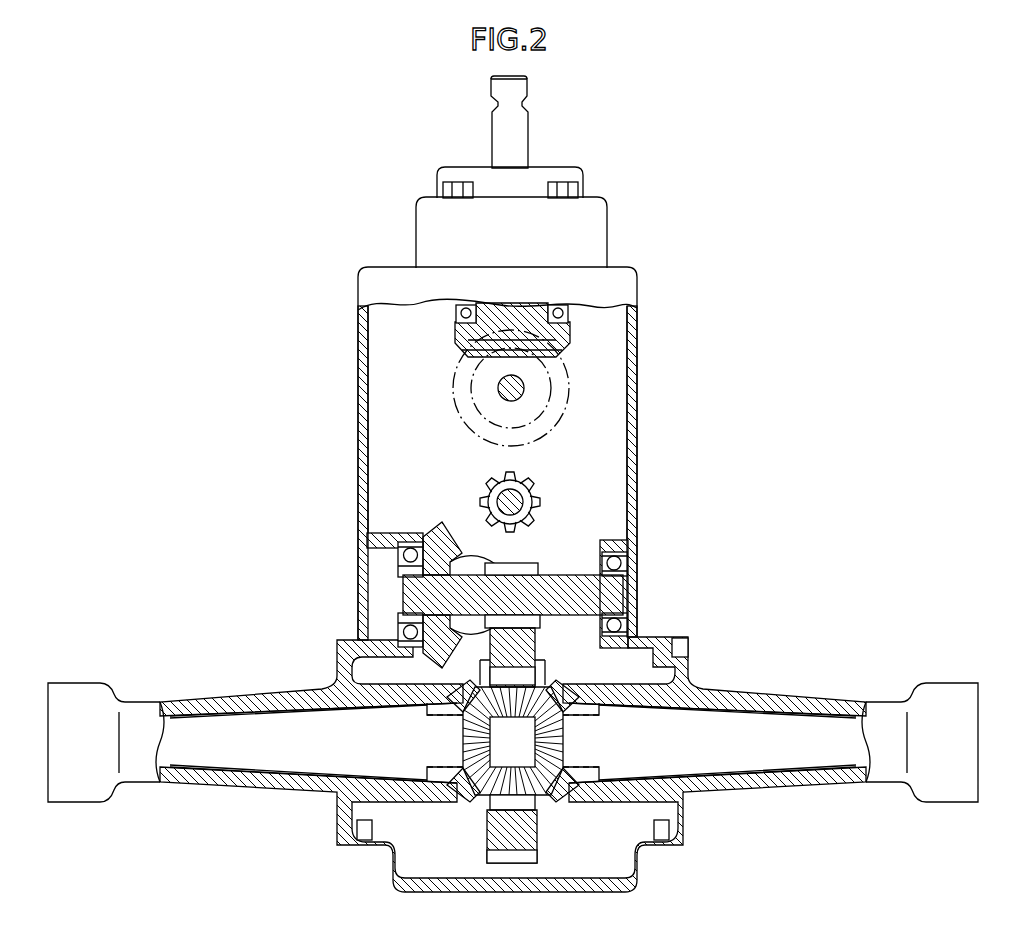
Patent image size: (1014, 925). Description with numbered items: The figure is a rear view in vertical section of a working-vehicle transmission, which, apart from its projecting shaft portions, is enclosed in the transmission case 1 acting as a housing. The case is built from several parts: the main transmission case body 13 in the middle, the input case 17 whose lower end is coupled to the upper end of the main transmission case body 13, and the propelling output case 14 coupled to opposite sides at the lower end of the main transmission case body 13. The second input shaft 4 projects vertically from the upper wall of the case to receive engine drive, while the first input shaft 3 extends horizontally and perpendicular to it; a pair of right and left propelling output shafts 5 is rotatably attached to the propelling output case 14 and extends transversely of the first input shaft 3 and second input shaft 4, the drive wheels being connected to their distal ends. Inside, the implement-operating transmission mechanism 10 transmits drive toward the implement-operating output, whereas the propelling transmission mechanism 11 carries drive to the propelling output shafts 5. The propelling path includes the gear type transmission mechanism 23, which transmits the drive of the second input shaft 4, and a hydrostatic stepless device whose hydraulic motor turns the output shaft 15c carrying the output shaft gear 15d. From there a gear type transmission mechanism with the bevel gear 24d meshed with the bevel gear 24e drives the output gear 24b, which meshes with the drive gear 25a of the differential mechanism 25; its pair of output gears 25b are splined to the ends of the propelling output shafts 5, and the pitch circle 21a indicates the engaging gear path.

The transmission case 1 is at (713, 508).
The first input shaft 3 is at (525, 388).
The second input shaft 4 is at (526, 138).
The propelling output shaft 5 is at (197, 745).
The implement-operating transmission mechanism 10 is at (584, 333).
The propelling transmission mechanism 11 is at (390, 590).
The main transmission case body 13 is at (358, 425).
The propelling output case 14 is at (262, 698).
The output shaft of the hydraulic motor 15c is at (537, 495).
The output shaft gear 15d is at (497, 473).
The input case 17 is at (585, 253).
The pitch circle of gear 21a is at (565, 415).
The gear type transmission mechanism 23 is at (444, 383).
The output gear 24b is at (532, 567).
The bevel gear 24d is at (480, 553).
The bevel gear 24e is at (425, 530).
The differential mechanism 25 is at (559, 819).
The drive gear 25a is at (487, 858).
The output gear 25b is at (463, 743).